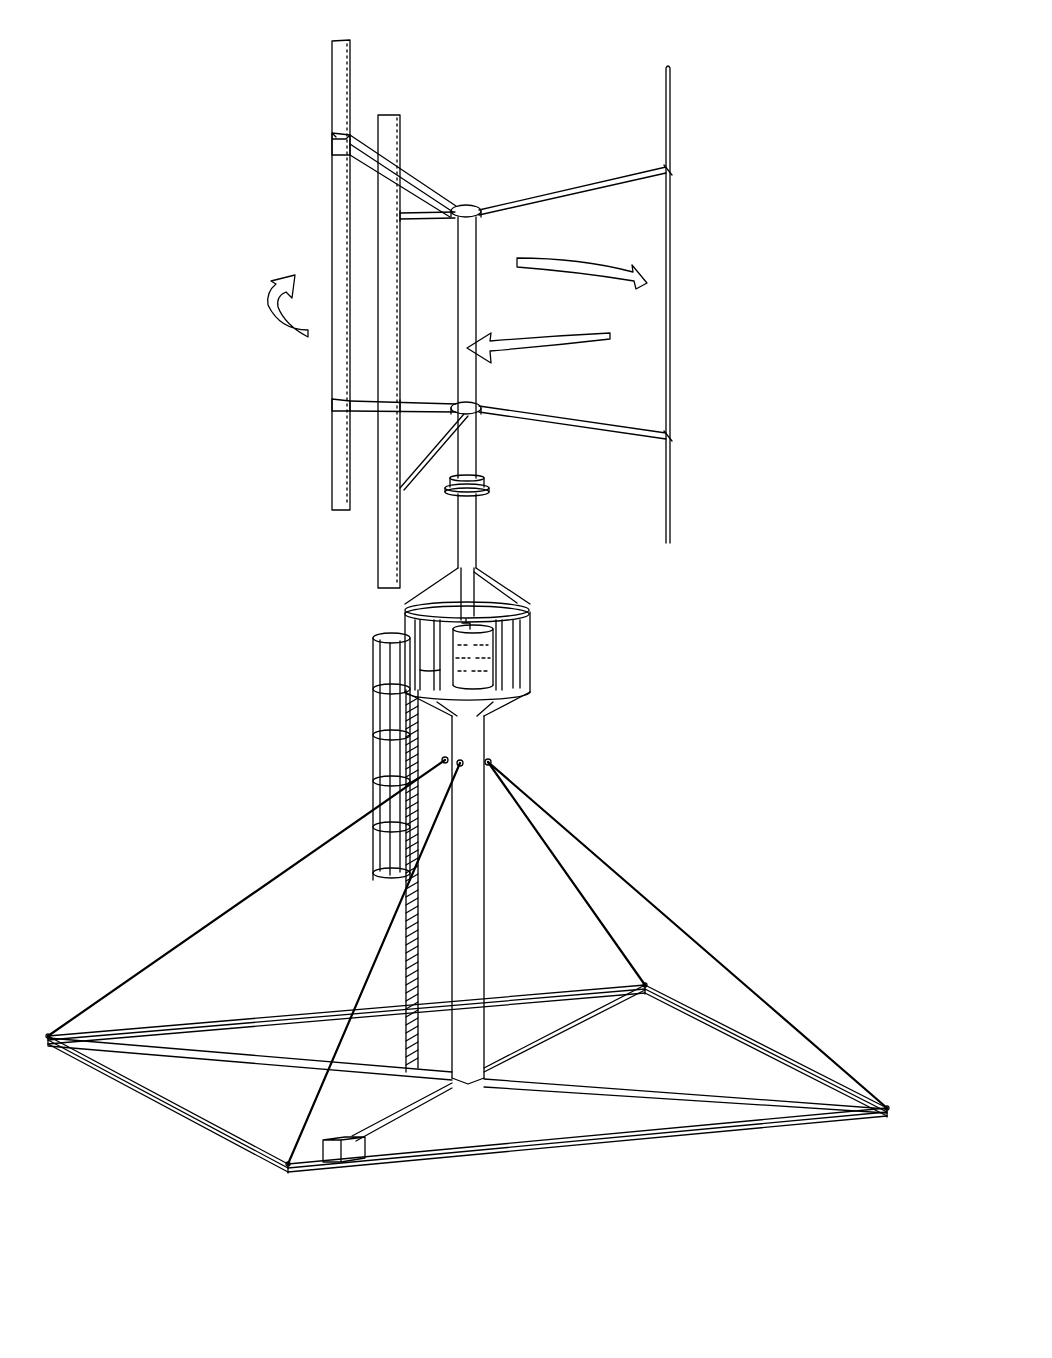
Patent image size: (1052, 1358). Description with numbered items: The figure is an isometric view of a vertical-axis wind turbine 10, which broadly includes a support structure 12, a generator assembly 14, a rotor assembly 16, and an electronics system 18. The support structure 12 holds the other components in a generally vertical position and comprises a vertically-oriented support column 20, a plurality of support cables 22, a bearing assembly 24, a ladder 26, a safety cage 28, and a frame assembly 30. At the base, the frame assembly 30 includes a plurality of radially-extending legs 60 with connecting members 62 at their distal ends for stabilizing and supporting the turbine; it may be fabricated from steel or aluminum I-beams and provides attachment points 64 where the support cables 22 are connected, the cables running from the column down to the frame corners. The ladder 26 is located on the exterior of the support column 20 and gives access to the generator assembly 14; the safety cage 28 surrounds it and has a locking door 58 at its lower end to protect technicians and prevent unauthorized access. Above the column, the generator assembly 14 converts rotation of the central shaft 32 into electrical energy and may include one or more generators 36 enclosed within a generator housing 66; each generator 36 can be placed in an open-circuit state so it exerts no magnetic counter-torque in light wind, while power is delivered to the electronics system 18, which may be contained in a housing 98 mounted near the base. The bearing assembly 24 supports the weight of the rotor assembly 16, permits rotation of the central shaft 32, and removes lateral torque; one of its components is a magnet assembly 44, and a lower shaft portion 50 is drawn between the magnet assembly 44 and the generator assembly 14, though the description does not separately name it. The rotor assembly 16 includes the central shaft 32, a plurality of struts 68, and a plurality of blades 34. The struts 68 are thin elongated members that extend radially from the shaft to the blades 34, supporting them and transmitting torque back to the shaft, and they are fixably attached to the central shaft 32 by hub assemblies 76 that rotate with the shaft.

The vertical-axis wind turbine 10 is at (186, 88).
The support structure 12 is at (706, 866).
The generator assembly 14 is at (590, 614).
The rotor assembly 16 is at (733, 268).
The electronics system 18 is at (322, 1190).
The support column 20 is at (478, 906).
The support cables 22 is at (600, 858).
The bearing assembly 24 is at (520, 569).
The ladder 26 is at (372, 755).
The safety cage 28 is at (372, 665).
The frame assembly 30 is at (780, 1130).
The central shaft 32 is at (476, 298).
The blades 34 is at (352, 62).
The generator 36 is at (494, 672).
The magnet assembly 44 is at (490, 484).
The lower shaft 50 is at (478, 522).
The locking door 58 is at (372, 888).
The legs 60 is at (568, 1089).
The connecting members 62 is at (556, 992).
The attachment points 64 is at (649, 984).
The generator housing 66 is at (570, 678).
The struts 68 is at (427, 212).
The hub assembly 76 is at (483, 215).
The housing 98 is at (352, 1163).